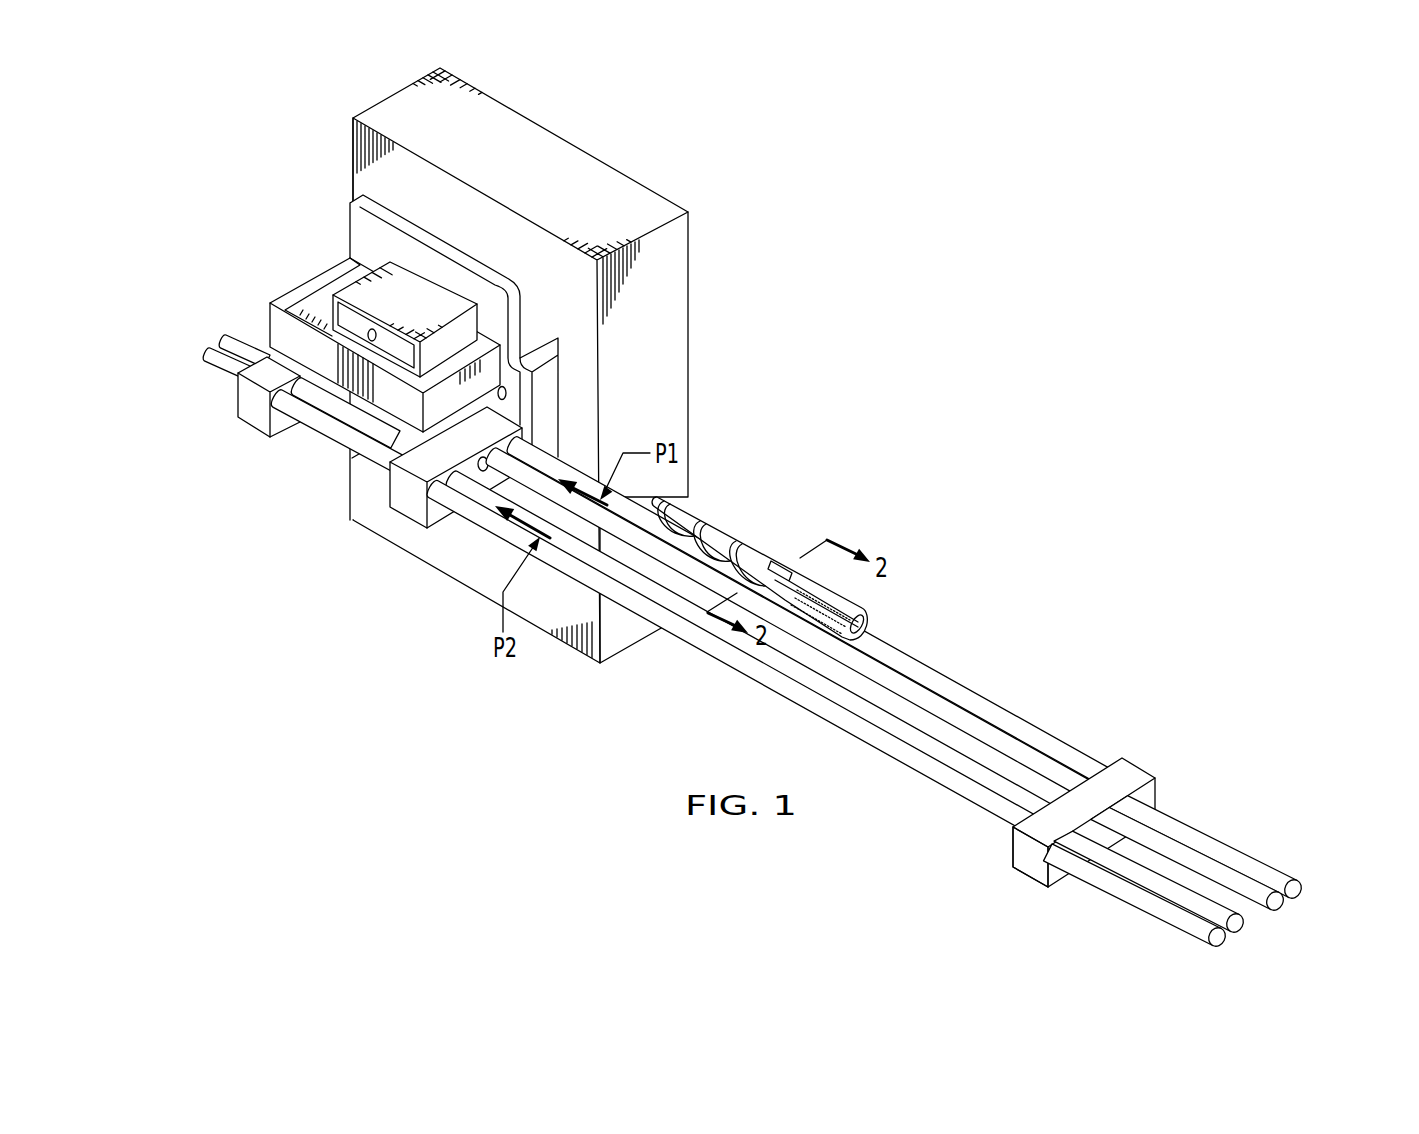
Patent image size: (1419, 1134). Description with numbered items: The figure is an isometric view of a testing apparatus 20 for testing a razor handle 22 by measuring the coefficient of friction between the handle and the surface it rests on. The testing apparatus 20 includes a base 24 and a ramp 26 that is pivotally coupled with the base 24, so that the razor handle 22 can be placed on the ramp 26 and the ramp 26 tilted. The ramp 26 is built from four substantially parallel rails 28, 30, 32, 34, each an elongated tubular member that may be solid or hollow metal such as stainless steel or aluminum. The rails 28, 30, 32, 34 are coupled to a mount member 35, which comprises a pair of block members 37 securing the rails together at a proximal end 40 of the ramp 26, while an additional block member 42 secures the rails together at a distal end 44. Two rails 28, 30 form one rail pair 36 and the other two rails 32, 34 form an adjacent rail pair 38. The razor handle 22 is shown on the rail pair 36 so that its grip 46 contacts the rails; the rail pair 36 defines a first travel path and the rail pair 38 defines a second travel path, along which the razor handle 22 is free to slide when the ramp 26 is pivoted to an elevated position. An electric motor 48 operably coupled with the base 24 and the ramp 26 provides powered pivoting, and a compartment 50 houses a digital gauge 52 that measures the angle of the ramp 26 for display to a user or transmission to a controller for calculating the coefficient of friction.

The testing apparatus 20 is at (988, 358).
The razor handle 22 is at (781, 514).
The base 24 is at (570, 153).
The ramp 26 is at (1309, 787).
The rail 28 is at (1220, 838).
The rail 30 is at (1285, 903).
The rail 32 is at (1252, 927).
The rail 34 is at (1143, 902).
The mount member 35 is at (316, 549).
The rail pair 36 is at (1332, 897).
The block members 37 is at (262, 432).
The rail pair 38 is at (1246, 952).
The proximal end 40 is at (211, 399).
The additional block member 42 is at (1032, 880).
The distal end 44 is at (1144, 756).
The grip 46 is at (868, 613).
The electric motor 48 is at (538, 358).
The compartment 50 is at (316, 310).
The digital gauge 52 is at (428, 293).